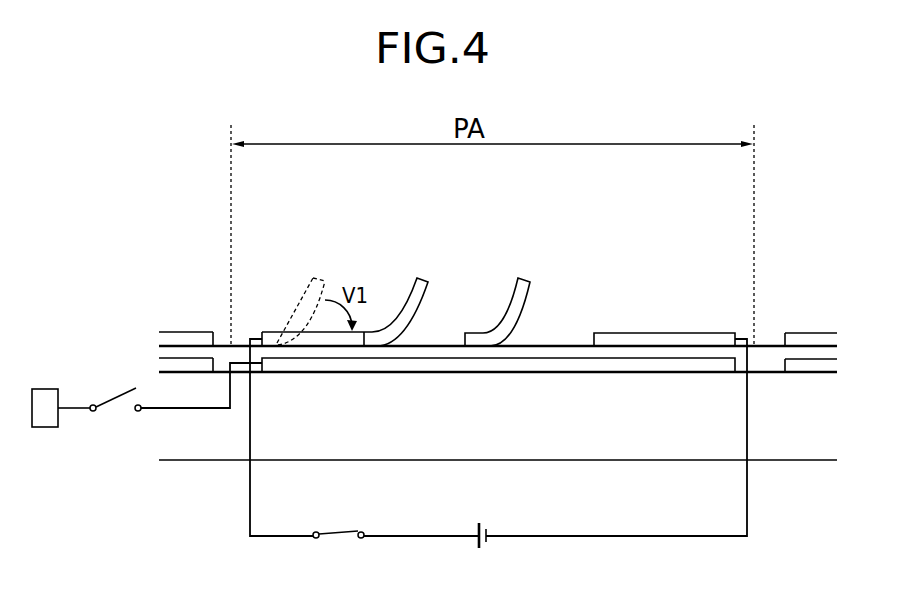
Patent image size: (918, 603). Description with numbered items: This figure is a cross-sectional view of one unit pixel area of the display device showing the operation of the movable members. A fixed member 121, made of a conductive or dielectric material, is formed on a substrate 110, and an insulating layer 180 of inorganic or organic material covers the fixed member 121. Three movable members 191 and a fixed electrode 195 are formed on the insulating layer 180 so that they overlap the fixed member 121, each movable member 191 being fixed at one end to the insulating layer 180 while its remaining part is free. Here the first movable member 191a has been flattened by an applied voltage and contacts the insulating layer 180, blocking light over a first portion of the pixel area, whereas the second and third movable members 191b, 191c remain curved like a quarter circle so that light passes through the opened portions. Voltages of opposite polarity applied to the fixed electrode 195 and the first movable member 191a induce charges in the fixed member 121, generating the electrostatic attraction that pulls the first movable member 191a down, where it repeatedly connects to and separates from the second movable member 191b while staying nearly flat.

The substrate 110 is at (213, 442).
The fixed member 121 is at (545, 373).
The insulating layer 180 is at (660, 355).
The movable member 191 is at (517, 200).
The first movable member 191a is at (305, 330).
The second movable member 191b is at (402, 310).
The third movable member 191c is at (510, 312).
The fixed electrode 195 is at (636, 340).